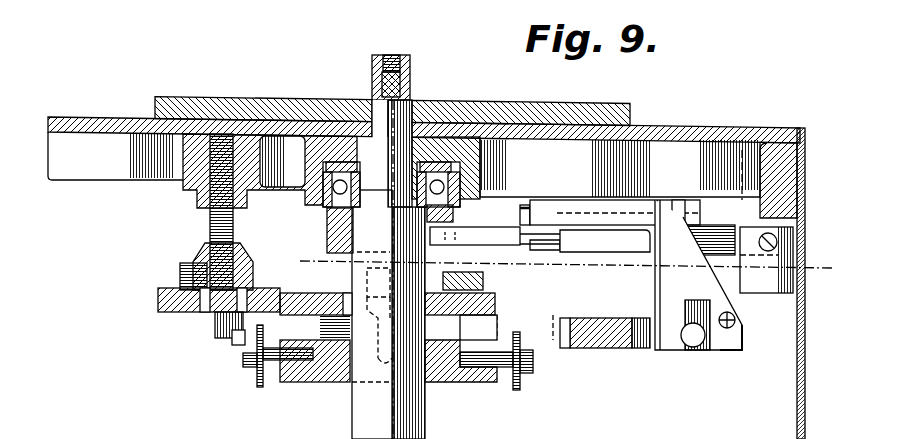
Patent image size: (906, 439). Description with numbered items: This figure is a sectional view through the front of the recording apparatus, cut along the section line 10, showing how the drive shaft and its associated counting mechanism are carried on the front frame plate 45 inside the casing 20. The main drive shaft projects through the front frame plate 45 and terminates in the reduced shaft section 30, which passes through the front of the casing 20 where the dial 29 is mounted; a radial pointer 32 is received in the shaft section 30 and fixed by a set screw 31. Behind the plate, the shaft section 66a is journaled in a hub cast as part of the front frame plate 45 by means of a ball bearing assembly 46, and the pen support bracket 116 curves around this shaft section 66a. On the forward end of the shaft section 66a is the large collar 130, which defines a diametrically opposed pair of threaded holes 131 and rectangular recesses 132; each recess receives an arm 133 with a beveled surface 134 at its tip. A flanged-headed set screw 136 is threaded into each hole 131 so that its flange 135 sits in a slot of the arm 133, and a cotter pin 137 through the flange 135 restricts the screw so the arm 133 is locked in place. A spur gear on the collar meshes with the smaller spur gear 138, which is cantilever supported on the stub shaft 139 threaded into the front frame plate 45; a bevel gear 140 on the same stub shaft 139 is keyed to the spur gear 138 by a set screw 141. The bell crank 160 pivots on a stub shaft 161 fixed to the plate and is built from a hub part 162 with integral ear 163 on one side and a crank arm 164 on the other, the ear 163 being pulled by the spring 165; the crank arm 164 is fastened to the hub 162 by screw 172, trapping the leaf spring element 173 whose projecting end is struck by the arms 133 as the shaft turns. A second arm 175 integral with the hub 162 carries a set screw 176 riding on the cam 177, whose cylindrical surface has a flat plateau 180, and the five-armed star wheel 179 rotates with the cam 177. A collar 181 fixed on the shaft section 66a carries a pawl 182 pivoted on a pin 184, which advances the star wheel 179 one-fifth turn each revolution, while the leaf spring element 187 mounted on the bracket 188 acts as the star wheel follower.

The section line 10 is at (309, 247).
The casing 20 is at (790, 399).
The dial 29 is at (165, 96).
The shaft section 30 is at (372, 72).
The set screw 31 is at (392, 55).
The radial pointer 32 is at (402, 84).
The front frame plate 45 is at (148, 117).
The ball bearing assembly 46 is at (330, 193).
The shaft section 66a is at (362, 428).
The pen support bracket 116 is at (482, 275).
The large collar 130 is at (332, 384).
The threaded holes 131 is at (300, 376).
The rectangular recesses 132 is at (349, 283).
The arm 133 is at (290, 295).
The beveled surface 134 is at (218, 330).
The flange 135 is at (257, 383).
The flanged-headed set screw 136 is at (250, 362).
The cotter pin 137 is at (234, 344).
The spur gear 138 is at (190, 312).
The stub shaft 139 is at (210, 218).
The bevel gear 140 is at (203, 250).
The set screw 141 is at (180, 272).
The bell crank 160 is at (643, 356).
The stub shaft 161 is at (670, 278).
The hub part 162 is at (652, 290).
The ear 163 is at (730, 350).
The crank arm 164 is at (592, 318).
The spring 165 is at (735, 318).
The screw 172 is at (705, 350).
The leaf spring element 173 is at (566, 349).
The second arm 175 is at (582, 218).
The set screw 176 is at (520, 214).
The cam 177 is at (530, 216).
The star wheel 179 is at (588, 241).
The flat plateau 180 is at (548, 252).
The collar 181 is at (327, 222).
The pawl 182 is at (470, 240).
The pin 184 is at (448, 216).
The leaf spring element 187 is at (710, 228).
The bracket 188 is at (793, 246).